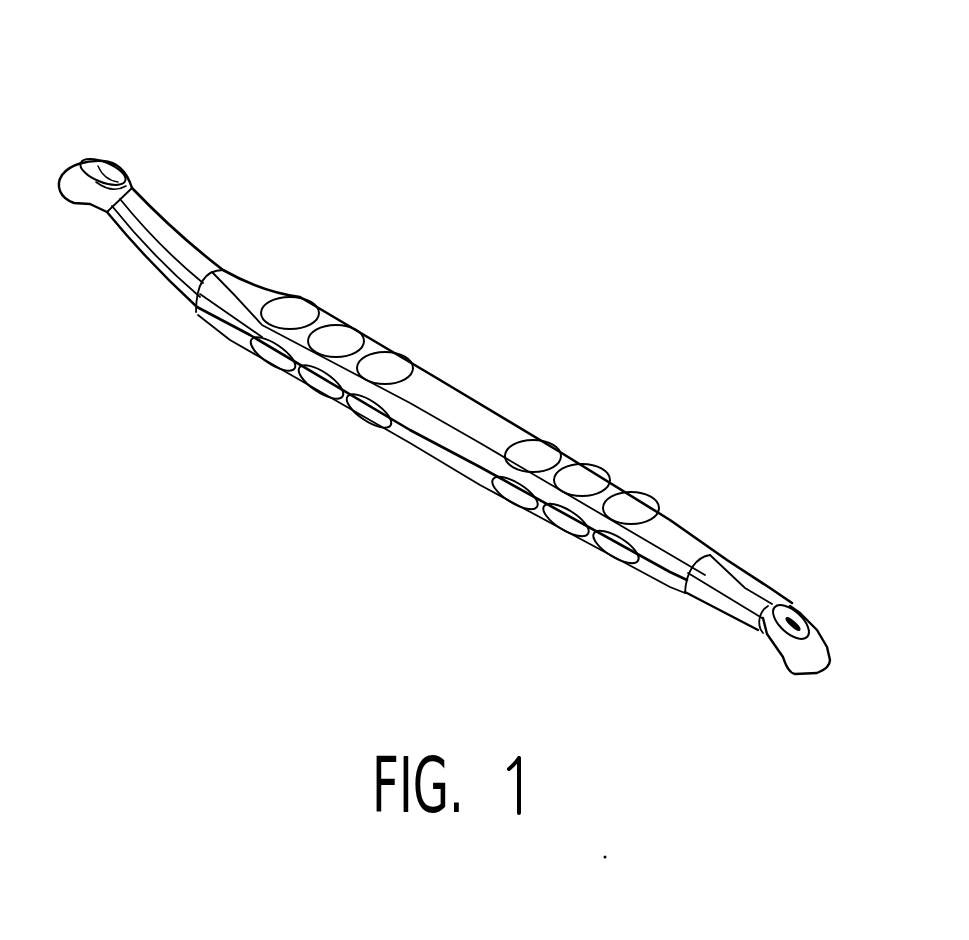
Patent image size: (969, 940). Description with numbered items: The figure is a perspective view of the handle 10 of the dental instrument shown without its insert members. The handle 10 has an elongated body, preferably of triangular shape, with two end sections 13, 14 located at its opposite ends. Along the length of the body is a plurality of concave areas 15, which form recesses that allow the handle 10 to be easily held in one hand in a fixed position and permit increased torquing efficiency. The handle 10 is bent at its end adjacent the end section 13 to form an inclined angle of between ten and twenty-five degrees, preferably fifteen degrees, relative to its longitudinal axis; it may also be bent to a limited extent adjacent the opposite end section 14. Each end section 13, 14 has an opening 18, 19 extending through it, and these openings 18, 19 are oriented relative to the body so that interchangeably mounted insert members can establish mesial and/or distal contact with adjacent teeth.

The handle 10 is at (432, 365).
The end section 13 is at (77, 158).
The end section 14 is at (837, 636).
The concave areas 15 is at (387, 345).
The opening 18 is at (107, 167).
The opening 19 is at (803, 614).